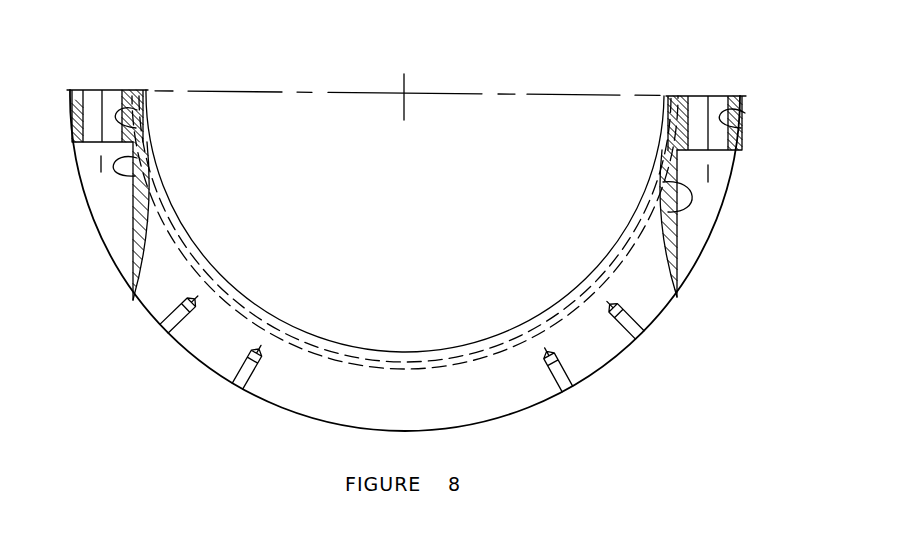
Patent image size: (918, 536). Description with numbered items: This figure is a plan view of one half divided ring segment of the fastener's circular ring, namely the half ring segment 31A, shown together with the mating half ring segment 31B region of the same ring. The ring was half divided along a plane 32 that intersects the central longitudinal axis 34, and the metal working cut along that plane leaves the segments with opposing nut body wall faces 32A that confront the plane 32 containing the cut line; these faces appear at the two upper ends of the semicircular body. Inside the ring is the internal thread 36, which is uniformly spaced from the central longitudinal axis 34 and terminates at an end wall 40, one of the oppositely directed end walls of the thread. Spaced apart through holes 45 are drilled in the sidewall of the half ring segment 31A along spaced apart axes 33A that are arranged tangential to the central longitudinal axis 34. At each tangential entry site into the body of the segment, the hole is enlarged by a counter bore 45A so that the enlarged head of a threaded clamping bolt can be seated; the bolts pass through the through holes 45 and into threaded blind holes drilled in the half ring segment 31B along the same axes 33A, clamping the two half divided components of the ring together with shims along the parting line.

The half ring segment 31A is at (655, 312).
The half ring segment 31B is at (207, 375).
The plane 32 is at (498, 94).
The nut body wall face 32A is at (91, 90).
The axis 33A is at (100, 183).
The central longitudinal axis 34 is at (404, 82).
The internal thread 36 is at (178, 228).
The end wall 40 is at (602, 347).
The through hole 45 is at (136, 128).
The counter bore 45A is at (135, 176).